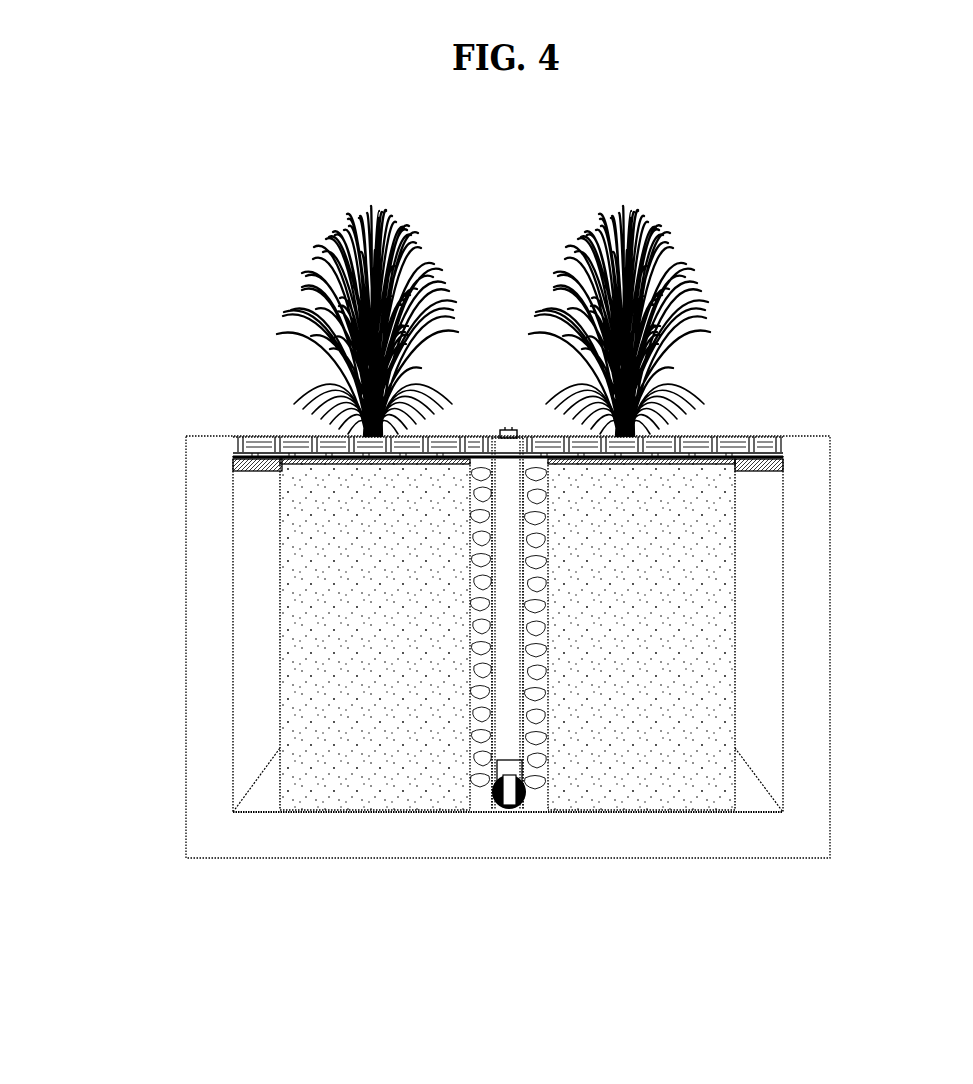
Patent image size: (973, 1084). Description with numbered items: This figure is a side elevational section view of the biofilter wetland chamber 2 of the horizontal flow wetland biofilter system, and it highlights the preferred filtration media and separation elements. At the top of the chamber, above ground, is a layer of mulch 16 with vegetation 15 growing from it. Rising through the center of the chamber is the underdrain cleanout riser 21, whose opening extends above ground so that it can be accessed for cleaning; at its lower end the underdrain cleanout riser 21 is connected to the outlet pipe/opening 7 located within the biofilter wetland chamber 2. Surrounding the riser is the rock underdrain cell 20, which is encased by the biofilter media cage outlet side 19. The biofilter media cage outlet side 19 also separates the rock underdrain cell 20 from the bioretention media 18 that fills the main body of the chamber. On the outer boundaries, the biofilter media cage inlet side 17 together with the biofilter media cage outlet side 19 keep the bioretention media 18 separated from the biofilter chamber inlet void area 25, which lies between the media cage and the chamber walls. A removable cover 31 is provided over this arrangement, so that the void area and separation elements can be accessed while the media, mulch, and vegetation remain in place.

The biofilter wetland chamber 2 is at (821, 876).
The outlet pipe/opening 7 is at (497, 790).
The vegetation 15 is at (665, 312).
The mulch 16 is at (747, 439).
The biofilter media cage inlet side 17 is at (282, 556).
The bioretention media 18 is at (325, 721).
The biofilter media cage outlet side 19 is at (548, 592).
The rock underdrain cell 20 is at (492, 495).
The underdrain cleanout riser 21 is at (508, 430).
The biofilter chamber inlet void area 25 is at (258, 655).
The removable cover 31 is at (783, 466).